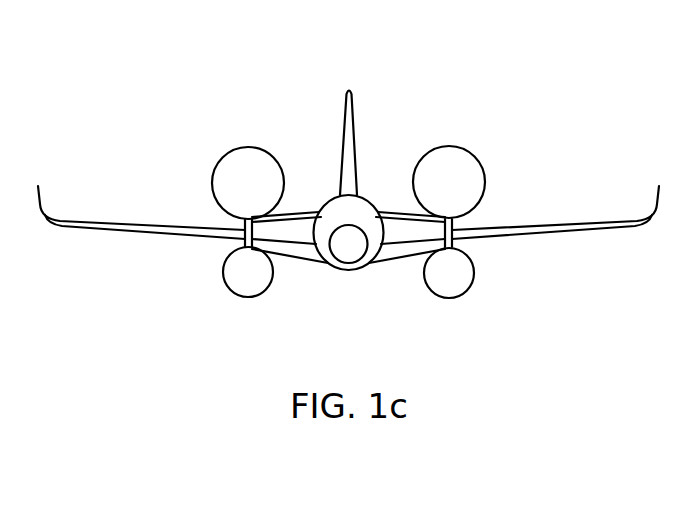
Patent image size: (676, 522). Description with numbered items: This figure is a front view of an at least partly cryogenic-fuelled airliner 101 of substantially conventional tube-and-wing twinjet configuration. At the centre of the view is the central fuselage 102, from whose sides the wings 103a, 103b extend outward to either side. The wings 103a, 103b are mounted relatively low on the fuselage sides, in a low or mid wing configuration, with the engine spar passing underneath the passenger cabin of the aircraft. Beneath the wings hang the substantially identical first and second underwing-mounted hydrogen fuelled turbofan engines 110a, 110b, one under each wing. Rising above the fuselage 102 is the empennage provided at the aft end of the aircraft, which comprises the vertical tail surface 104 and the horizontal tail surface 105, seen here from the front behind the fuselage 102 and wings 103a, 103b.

The airliner 101 is at (348, 191).
The central fuselage 102 is at (349, 263).
The wing 103a is at (608, 223).
The wing 103b is at (133, 228).
The vertical tail surface 104 is at (356, 133).
The horizontal tail surface 105 is at (303, 210).
The first underwing-mounted hydrogen fuelled turbofan engine 110a is at (225, 270).
The second underwing-mounted hydrogen fuelled turbofan engine 110b is at (475, 272).